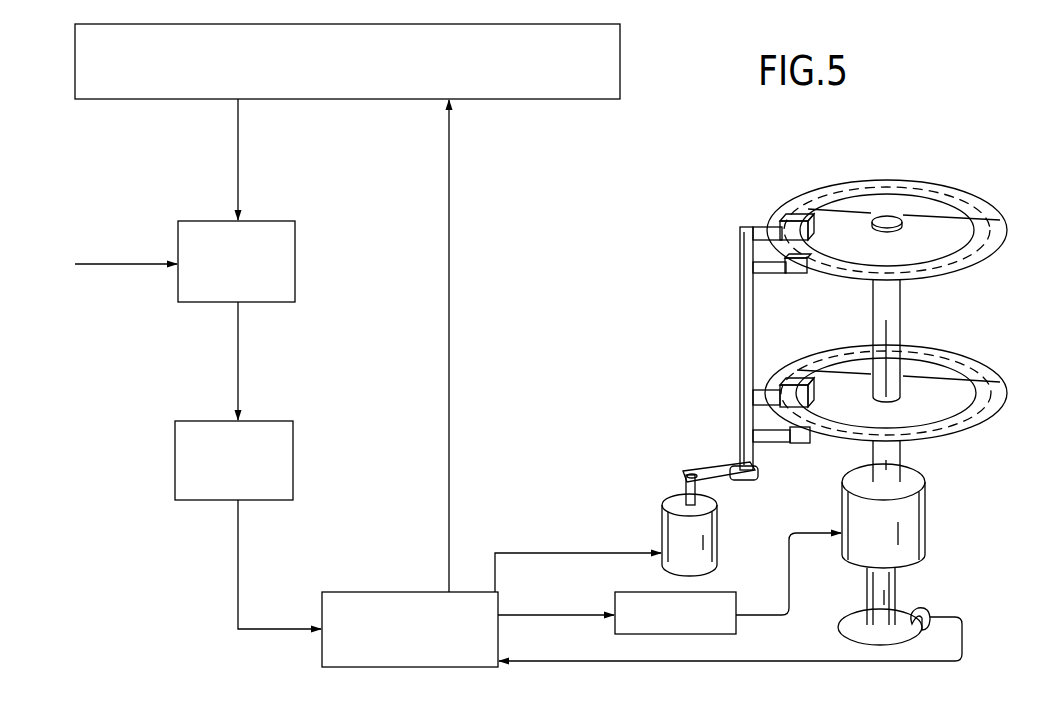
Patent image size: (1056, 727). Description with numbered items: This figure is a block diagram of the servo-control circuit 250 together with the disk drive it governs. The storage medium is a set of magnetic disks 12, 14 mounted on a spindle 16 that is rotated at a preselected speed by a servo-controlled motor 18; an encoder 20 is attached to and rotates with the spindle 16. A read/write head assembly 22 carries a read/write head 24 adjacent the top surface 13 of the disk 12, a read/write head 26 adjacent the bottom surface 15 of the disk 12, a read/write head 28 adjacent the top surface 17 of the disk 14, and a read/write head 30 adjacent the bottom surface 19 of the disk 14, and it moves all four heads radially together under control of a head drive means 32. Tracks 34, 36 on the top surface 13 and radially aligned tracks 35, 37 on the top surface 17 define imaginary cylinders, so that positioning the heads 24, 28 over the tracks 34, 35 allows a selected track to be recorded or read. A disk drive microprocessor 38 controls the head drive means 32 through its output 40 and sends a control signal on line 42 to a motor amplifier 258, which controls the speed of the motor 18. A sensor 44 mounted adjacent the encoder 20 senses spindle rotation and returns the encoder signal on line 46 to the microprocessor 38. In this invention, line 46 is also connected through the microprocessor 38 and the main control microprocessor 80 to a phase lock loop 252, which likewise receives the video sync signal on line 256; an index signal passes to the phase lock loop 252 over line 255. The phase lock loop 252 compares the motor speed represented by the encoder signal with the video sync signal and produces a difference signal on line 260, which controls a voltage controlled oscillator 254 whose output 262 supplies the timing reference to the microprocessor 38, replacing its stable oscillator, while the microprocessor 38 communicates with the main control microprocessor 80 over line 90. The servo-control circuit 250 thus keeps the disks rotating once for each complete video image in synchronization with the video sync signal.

The magnetic disk 12 is at (968, 194).
The top surface of disk 12 13 is at (1002, 238).
The magnetic disk 14 is at (928, 346).
The bottom surface of disk 12 15 is at (975, 266).
The spindle 16 is at (900, 457).
The top surface of disk 14 17 is at (978, 419).
The servo-controlled motor 18 is at (926, 510).
The bottom surface of disk 14 19 is at (956, 437).
The encoder 20 is at (856, 618).
The read/write head assembly 22 is at (755, 322).
The read/write head 24 is at (810, 230).
The read/write head 26 is at (802, 273).
The read/write head 28 is at (810, 393).
The read/write head 30 is at (803, 443).
The head drive means 32 is at (718, 529).
The track 34 is at (918, 197).
The track 35 is at (948, 413).
The track 36 is at (930, 266).
The track 37 is at (970, 373).
The disk drive microprocessor 38 is at (335, 592).
The output 40 is at (570, 553).
The line 42 is at (560, 615).
The sensor 44 is at (919, 613).
The input line 46 is at (792, 661).
The microprocessor 80 is at (75, 99).
The data line to main control microprocessor 90 is at (449, 486).
The servo-control circuit 250 is at (185, 380).
The phase lock loop 252 is at (272, 221).
The voltage controlled oscillator 254 is at (295, 446).
The index in line 255 is at (238, 186).
The line 256 is at (150, 266).
The motor amplifier 258 is at (738, 592).
The line 260 is at (238, 358).
The output 262 is at (238, 553).